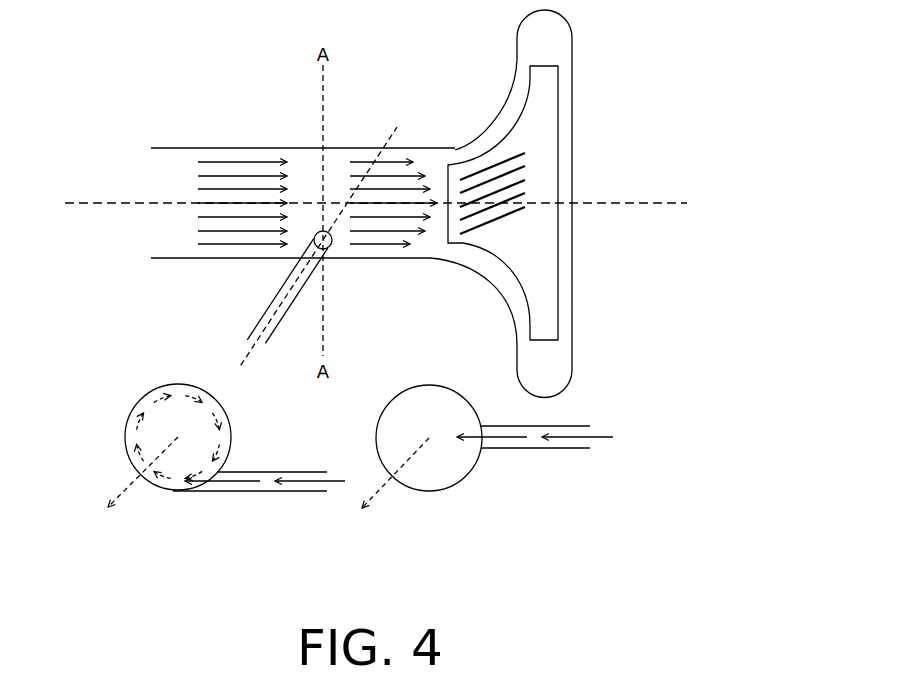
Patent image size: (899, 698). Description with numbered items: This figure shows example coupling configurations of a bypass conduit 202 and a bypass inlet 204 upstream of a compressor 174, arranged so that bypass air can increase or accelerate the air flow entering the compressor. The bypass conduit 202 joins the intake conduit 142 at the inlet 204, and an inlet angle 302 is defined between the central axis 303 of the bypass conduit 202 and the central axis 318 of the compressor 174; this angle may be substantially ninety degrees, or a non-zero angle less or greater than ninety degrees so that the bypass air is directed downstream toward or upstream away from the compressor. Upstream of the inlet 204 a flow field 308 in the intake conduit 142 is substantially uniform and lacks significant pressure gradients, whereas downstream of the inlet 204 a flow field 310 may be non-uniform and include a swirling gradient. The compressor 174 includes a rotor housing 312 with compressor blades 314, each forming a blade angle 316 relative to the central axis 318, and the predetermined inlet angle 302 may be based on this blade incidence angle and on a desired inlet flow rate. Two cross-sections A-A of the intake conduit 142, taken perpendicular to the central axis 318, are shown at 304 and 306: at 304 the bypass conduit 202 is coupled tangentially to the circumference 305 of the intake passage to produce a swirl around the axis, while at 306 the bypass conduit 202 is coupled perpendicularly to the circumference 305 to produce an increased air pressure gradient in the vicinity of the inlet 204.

The intake conduit 142 is at (178, 148).
The compressor 174 is at (516, 60).
The bypass conduit 202 is at (260, 318).
The bypass inlet 204 is at (332, 242).
The inlet angle 302 is at (382, 196).
The central axis of bypass conduit 303 is at (398, 130).
The tangential coupling configuration 304 is at (135, 385).
The circumference of intake passage 305 is at (124, 447).
The perpendicular coupling configuration 306 is at (443, 504).
The flow field upstream of inlet 308 is at (248, 150).
The flow field downstream of inlet 310 is at (383, 168).
The rotor housing 312 is at (490, 148).
The compressor blades 314 is at (498, 222).
The blade angle 316 is at (512, 203).
The central axis of compressor 318 is at (620, 203).